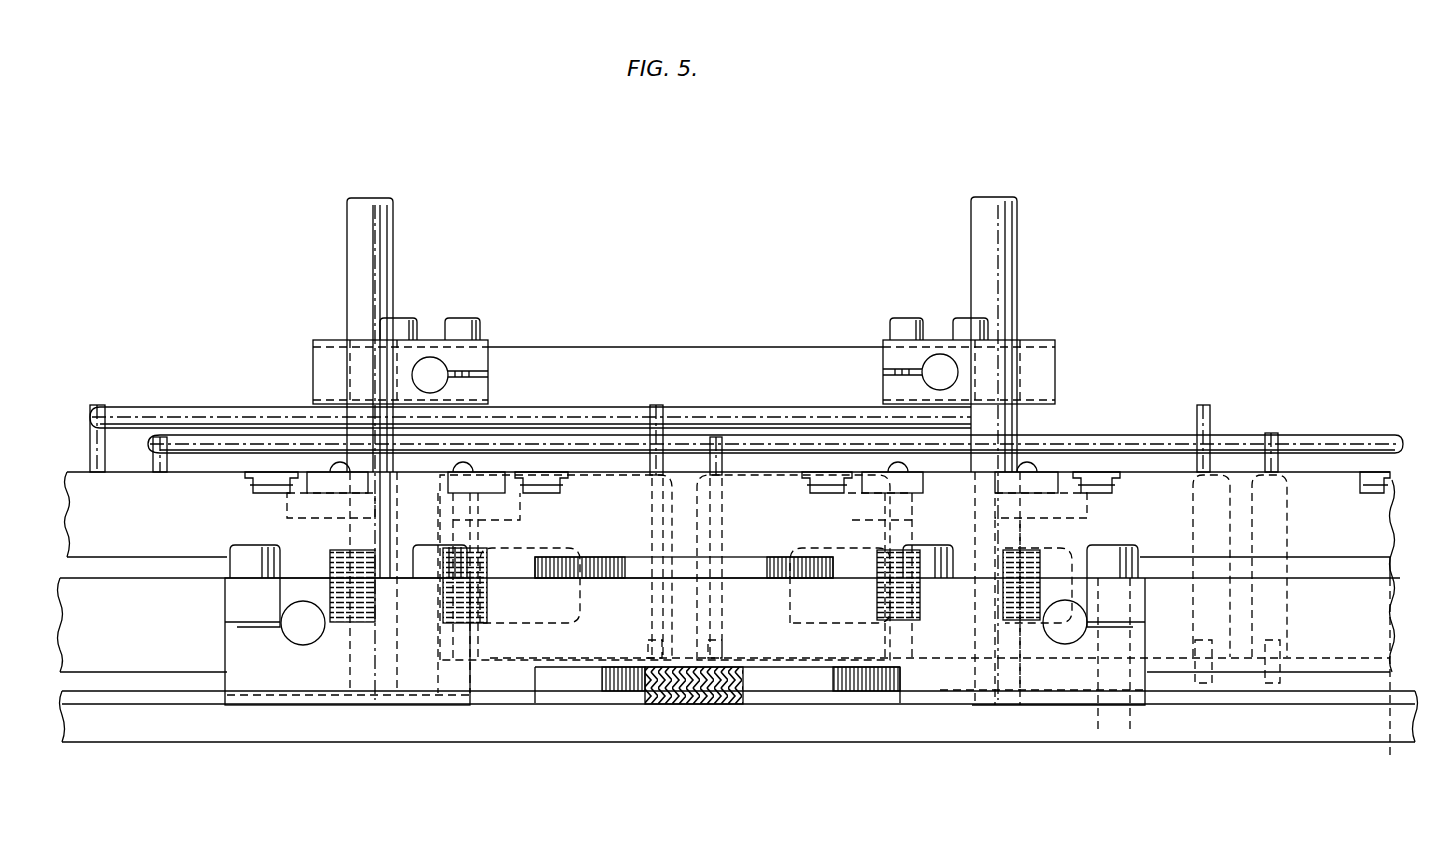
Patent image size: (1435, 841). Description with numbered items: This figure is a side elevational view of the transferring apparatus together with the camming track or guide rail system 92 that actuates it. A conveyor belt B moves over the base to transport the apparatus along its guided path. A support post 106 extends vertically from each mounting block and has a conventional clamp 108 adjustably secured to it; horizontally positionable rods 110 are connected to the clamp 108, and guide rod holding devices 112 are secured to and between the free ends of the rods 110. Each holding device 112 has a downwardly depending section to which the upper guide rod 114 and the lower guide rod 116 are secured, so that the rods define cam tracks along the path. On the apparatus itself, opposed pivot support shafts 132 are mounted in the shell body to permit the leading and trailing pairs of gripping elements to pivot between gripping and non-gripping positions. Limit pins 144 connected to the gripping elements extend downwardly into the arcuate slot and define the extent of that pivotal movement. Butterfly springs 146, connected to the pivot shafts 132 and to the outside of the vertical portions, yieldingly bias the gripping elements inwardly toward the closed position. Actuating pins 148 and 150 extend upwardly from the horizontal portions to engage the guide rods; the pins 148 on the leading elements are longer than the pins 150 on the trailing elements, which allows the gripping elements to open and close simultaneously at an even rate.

The guide rail system 92 is at (879, 188).
The support post 106 is at (373, 233).
The clamp 108 is at (327, 352).
The horizontally positionable rod 110 is at (428, 362).
The guide rod holding device 112 is at (712, 356).
The upper guide rod 114 is at (191, 409).
The lower guide rod 116 is at (1085, 440).
The pivot support shaft 132 is at (470, 532).
The limit pin 144 is at (660, 675).
The butterfly spring 146 is at (543, 548).
The actuating pin 148 is at (95, 446).
The actuating pin 150 is at (158, 470).
The conveyor belt B is at (767, 697).